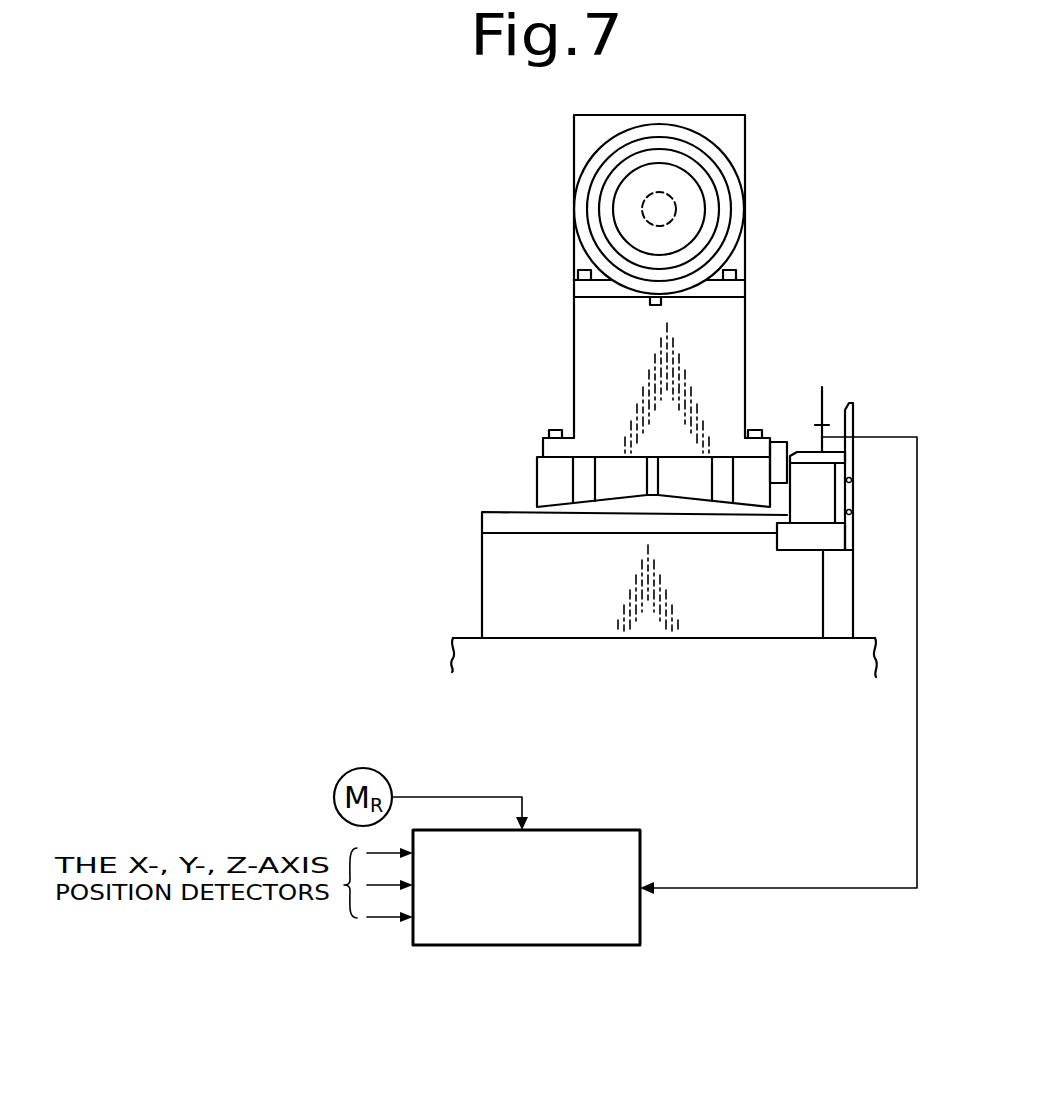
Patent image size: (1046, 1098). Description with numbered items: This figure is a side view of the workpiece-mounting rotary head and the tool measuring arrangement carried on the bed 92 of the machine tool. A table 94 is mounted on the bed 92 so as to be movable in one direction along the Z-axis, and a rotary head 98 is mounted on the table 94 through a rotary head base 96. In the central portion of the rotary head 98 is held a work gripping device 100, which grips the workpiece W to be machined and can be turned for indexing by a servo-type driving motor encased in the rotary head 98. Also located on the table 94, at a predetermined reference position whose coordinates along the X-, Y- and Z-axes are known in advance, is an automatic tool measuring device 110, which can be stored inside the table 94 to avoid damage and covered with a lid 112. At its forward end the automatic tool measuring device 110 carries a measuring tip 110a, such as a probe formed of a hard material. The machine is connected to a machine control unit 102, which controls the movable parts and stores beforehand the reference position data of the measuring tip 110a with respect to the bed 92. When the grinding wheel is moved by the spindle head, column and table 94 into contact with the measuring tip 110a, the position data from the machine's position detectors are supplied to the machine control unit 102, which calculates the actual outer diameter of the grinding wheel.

The bed 92 is at (468, 655).
The table 94 is at (498, 573).
The rotary head base 96 is at (583, 320).
The rotary head 98 is at (733, 133).
The work gripping device 100 is at (720, 190).
The workpiece W is at (667, 210).
The machine control unit 102 is at (587, 830).
The automatic tool measuring device 110 is at (806, 424).
The measuring tip 110a is at (823, 397).
The lid 112 is at (855, 417).